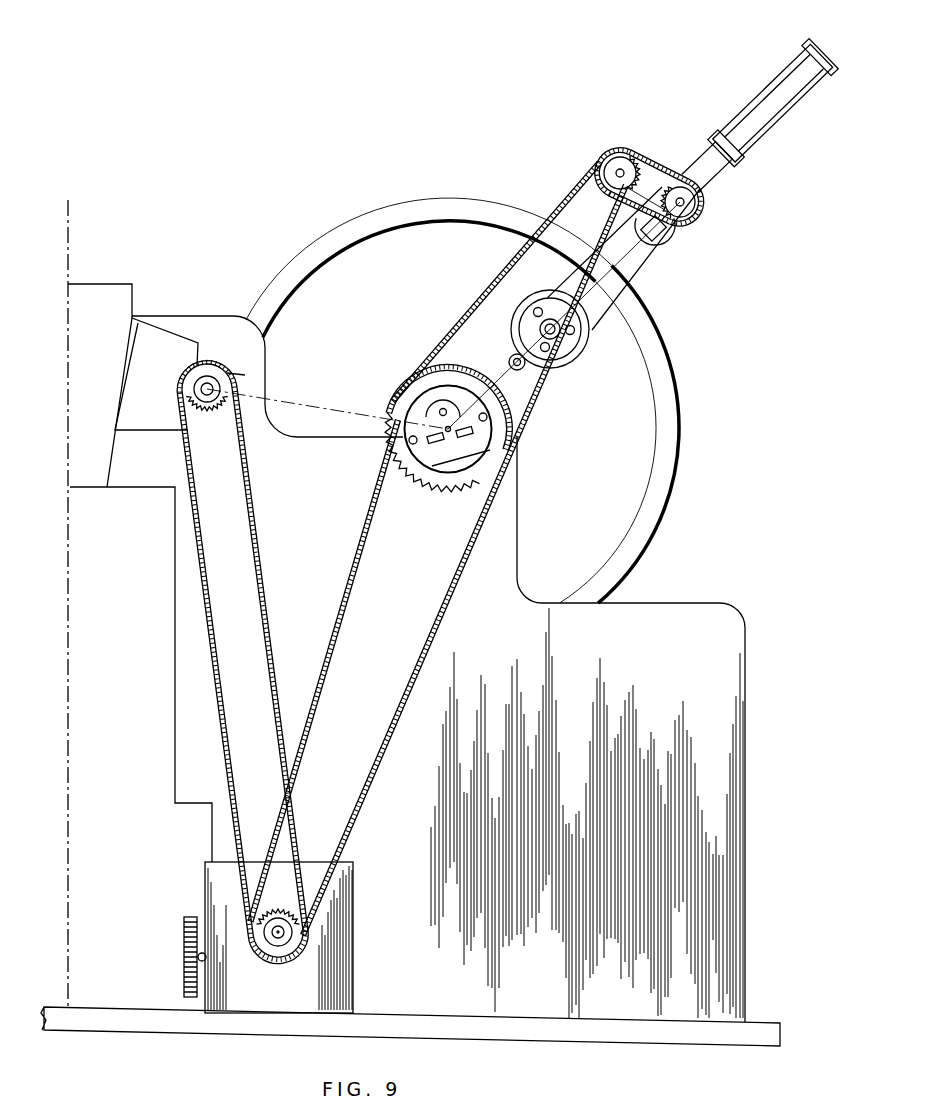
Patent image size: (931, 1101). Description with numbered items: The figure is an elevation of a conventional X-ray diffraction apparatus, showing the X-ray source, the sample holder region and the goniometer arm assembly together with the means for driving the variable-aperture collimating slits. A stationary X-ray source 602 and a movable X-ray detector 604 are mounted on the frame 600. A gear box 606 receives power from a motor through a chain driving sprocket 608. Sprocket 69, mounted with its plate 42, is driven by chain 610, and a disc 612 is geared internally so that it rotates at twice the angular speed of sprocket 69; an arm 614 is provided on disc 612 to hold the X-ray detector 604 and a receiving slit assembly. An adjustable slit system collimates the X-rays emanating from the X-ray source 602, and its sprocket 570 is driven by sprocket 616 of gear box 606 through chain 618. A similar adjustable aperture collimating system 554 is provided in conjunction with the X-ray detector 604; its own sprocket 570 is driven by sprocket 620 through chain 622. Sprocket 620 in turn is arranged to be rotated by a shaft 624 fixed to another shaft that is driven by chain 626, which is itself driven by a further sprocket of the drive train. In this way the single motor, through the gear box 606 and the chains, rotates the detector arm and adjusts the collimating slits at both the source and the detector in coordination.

The frame plate 600 is at (636, 658).
The X-ray source 602 is at (162, 337).
The X-ray detector 604 is at (762, 128).
The gear box 606 is at (328, 892).
The chain driving sprocket 608 is at (192, 917).
The chain 610 is at (386, 744).
The disc 612 is at (609, 461).
The arm 614 is at (635, 268).
The sprocket 616 is at (262, 912).
The chain 618 is at (257, 552).
The sprocket 620 is at (622, 168).
The chain 622 is at (647, 170).
The shaft 624 is at (616, 182).
The chain 626 is at (571, 211).
The sprocket 570 is at (203, 416).
The adjustable aperture collimating system 554 is at (677, 237).
The sprocket 69 is at (405, 477).
The mounting plate 42 is at (442, 430).